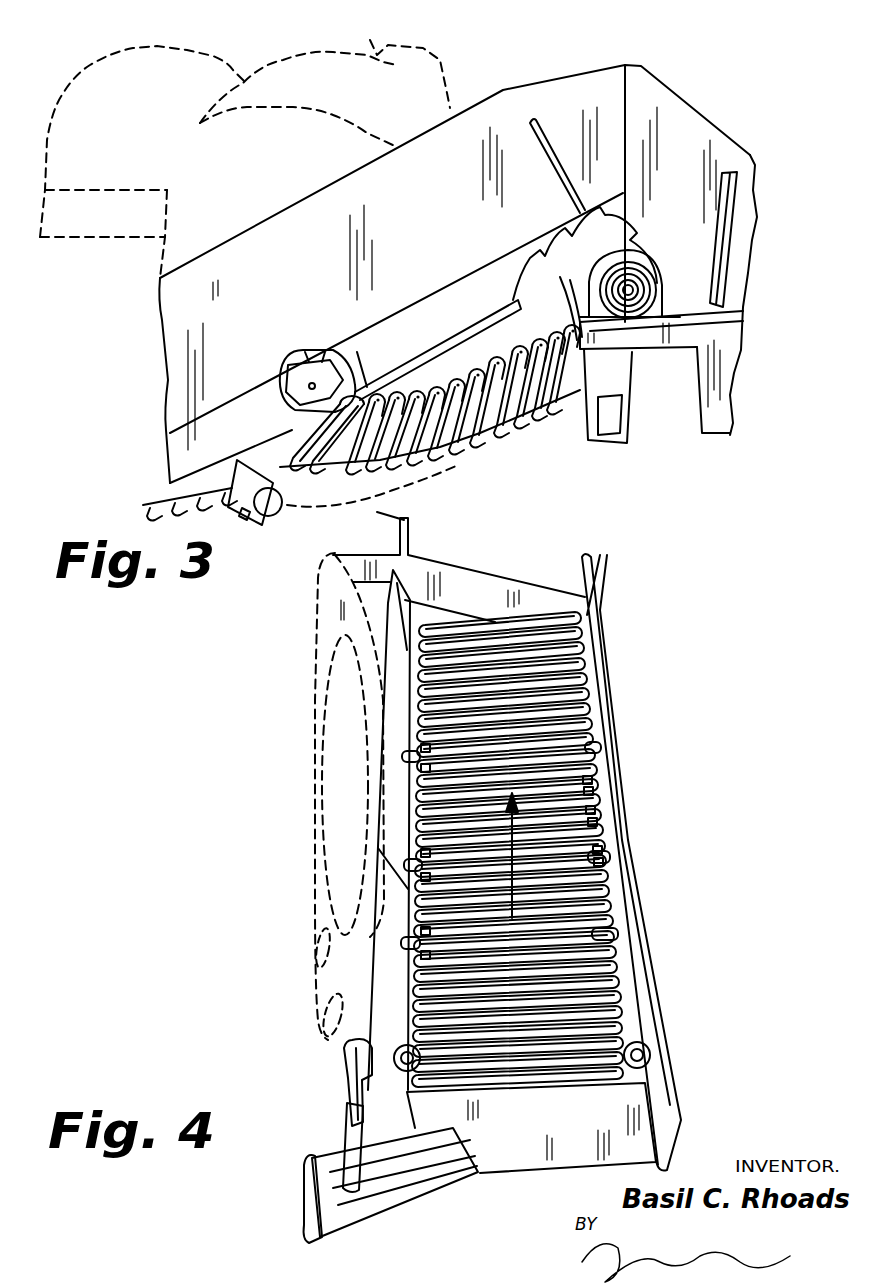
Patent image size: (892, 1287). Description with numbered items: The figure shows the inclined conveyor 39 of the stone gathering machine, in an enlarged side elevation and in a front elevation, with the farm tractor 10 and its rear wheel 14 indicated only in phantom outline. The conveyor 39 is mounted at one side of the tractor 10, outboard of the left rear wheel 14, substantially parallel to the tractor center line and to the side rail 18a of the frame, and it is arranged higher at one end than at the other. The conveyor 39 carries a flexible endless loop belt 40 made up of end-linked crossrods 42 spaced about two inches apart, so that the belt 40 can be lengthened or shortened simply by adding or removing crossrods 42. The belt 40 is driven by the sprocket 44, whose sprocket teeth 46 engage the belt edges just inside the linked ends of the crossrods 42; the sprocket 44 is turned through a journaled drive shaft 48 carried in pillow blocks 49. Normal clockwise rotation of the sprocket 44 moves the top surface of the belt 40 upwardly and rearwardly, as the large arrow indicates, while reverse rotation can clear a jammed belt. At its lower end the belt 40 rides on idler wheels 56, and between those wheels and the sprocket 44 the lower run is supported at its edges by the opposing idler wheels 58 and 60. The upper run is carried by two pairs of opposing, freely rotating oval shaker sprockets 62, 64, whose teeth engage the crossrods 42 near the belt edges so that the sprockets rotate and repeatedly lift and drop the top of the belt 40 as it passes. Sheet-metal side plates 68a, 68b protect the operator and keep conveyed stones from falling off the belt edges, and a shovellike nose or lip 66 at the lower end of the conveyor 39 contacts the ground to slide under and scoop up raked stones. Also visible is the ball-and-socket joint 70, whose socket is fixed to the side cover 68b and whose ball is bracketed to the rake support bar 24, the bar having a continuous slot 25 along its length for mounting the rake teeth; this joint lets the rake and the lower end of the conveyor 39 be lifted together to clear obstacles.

In FIG. 3, the farm tractor 10 is at (86, 72).
In FIG. 3, the rear wheels 14 is at (320, 115).
In FIG. 4, the rear wheels 14 is at (313, 598).
In FIG. 3, the side rail 18a is at (80, 228).
In FIG. 4, the support bar 24 is at (470, 1139).
In FIG. 4, the continuous slot 25 is at (413, 1178).
In FIG. 3, the conveyor 39 is at (528, 82).
In FIG. 4, the conveyor 39 is at (625, 697).
In FIG. 3, the endless loop belt 40 is at (500, 437).
In FIG. 4, the endless loop belt 40 is at (552, 668).
In FIG. 3, the crossrods 42 is at (462, 467).
In FIG. 4, the crossrods 42 is at (603, 830).
In FIG. 3, the sprocket 44 is at (577, 252).
In FIG. 3, the sprocket teeth 46 is at (555, 253).
In FIG. 3, the drive shaft 48 is at (634, 289).
In FIG. 3, the pillow blocks 49 is at (660, 305).
In FIG. 4, the idler wheels 56 is at (415, 1085).
In FIG. 3, the idler wheel 58 is at (270, 520).
In FIG. 4, the idler wheel 60 is at (411, 855).
In FIG. 3, the shaker sprocket 62 is at (300, 372).
In FIG. 4, the shaker sprocket 62 is at (420, 755).
In FIG. 4, the shaker sprocket 64 is at (416, 953).
In FIG. 4, the shovellike nose or lip 66 is at (528, 1128).
In FIG. 3, the side plate 68a is at (443, 216).
In FIG. 4, the side plate 68a is at (668, 1112).
In FIG. 4, the side plate 68b is at (390, 1073).
In FIG. 4, the ball-and-socket joint 70 is at (340, 1135).